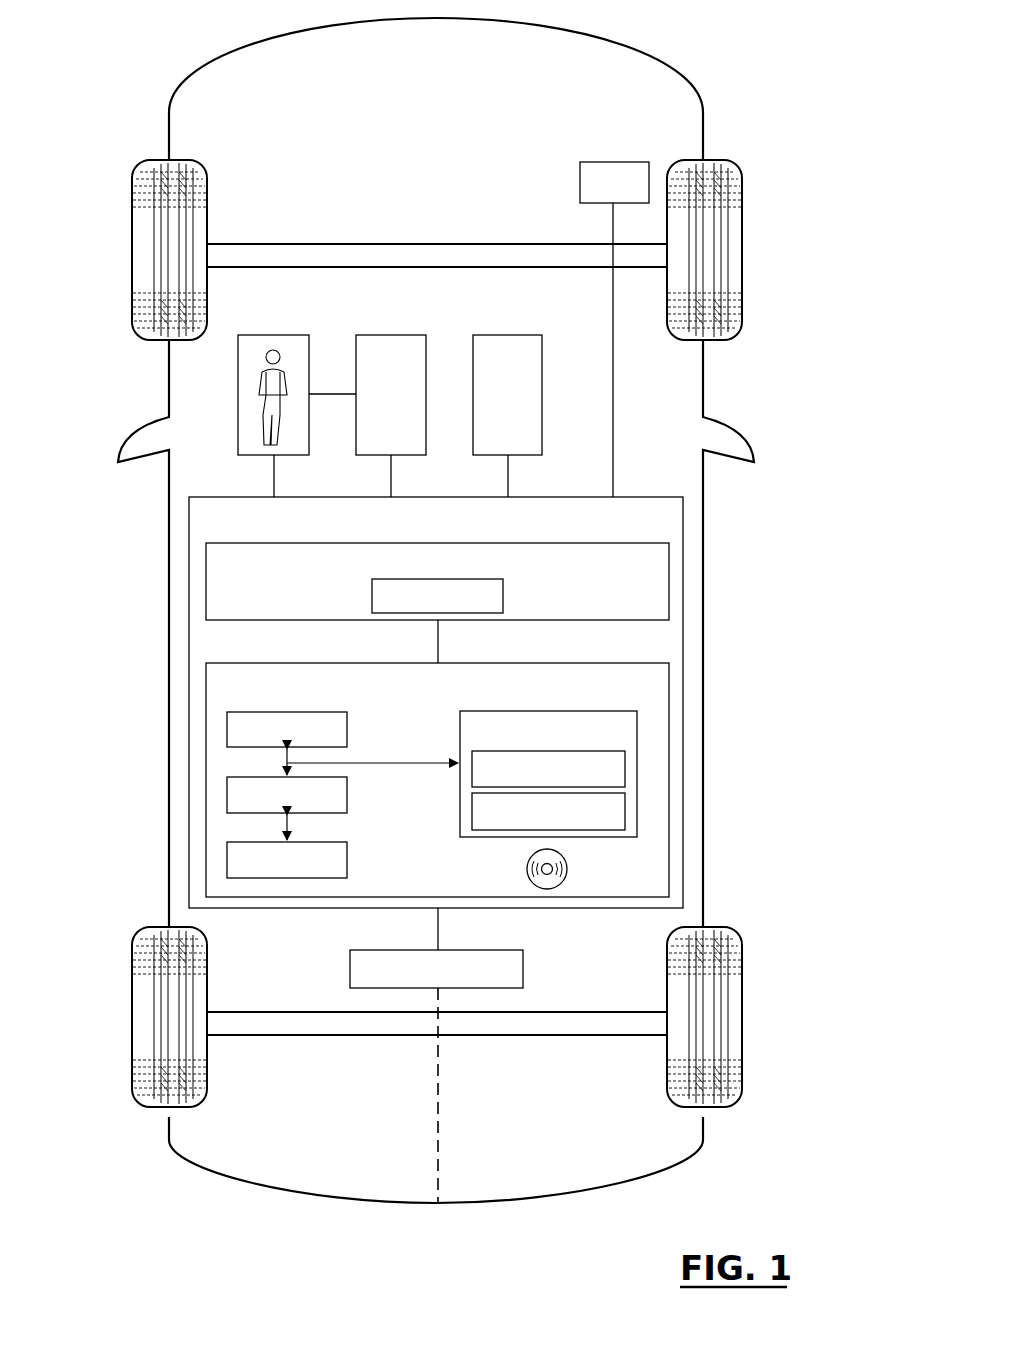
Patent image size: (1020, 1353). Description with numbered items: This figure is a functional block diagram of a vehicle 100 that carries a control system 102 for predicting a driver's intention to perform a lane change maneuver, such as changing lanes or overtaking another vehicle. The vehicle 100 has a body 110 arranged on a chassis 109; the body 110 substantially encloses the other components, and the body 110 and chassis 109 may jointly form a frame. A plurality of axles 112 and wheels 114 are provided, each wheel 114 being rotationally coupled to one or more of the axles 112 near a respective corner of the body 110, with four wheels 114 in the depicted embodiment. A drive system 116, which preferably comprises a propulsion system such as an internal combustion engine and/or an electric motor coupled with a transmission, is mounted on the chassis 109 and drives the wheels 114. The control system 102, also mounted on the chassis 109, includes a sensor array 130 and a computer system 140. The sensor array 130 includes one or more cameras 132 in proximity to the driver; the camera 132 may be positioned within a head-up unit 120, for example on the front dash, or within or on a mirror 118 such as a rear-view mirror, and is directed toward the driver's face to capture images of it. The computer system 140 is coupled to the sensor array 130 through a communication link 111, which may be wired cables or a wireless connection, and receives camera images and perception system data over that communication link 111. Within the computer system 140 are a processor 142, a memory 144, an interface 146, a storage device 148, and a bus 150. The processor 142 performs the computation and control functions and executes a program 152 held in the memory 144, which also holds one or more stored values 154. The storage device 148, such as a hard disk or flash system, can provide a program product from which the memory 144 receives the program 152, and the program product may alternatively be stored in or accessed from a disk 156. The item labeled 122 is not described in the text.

The vehicle 100 is at (128, 42).
The control system 102 is at (645, 497).
The chassis 109 is at (440, 1122).
The body 110 is at (169, 592).
The communication link 111 is at (440, 652).
The axles 112 is at (302, 236).
The wheels 114 is at (742, 257).
The drive system 116 is at (614, 162).
The mirror 118 is at (508, 335).
The head-up unit 120 is at (390, 335).
The power source 122 is at (490, 950).
The sensor array 130 is at (613, 543).
The camera 132 is at (503, 597).
The computer system 140 is at (613, 663).
The processor 142 is at (227, 729).
The memory 144 is at (595, 711).
The interface 146 is at (227, 796).
The storage device 148 is at (227, 861).
The bus 150 is at (283, 760).
The program 152 is at (625, 769).
The stored values 154 is at (625, 812).
The disk 156 is at (567, 870).